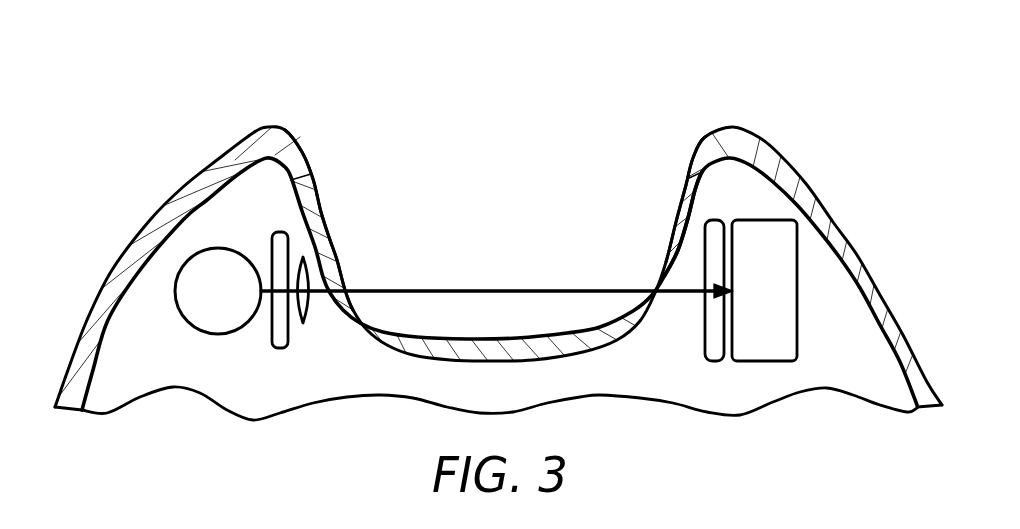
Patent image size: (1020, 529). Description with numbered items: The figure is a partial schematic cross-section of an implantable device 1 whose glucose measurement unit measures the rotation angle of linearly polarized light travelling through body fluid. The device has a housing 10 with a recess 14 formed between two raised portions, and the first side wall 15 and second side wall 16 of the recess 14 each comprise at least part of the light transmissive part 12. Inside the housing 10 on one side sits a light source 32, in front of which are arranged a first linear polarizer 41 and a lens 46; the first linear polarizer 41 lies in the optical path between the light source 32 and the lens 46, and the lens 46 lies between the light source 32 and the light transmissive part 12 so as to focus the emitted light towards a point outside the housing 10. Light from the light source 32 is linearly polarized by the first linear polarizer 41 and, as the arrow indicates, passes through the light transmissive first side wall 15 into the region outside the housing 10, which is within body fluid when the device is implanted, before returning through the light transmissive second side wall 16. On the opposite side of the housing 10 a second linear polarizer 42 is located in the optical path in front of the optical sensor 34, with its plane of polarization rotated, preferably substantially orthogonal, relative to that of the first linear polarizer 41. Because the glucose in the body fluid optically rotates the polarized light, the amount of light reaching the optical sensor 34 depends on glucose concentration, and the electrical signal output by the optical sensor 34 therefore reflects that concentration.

The implantable device 1 is at (192, 99).
The housing 10 is at (813, 198).
The light transmissive part 12 is at (307, 195).
The recess 14 is at (648, 176).
The first side wall 15 is at (326, 228).
The second side wall 16 is at (673, 227).
The light source 32 is at (187, 320).
The optical sensor 34 is at (797, 347).
The first linear polarizer 41 is at (280, 350).
The second linear polarizer 42 is at (700, 348).
The lens 46 is at (305, 321).